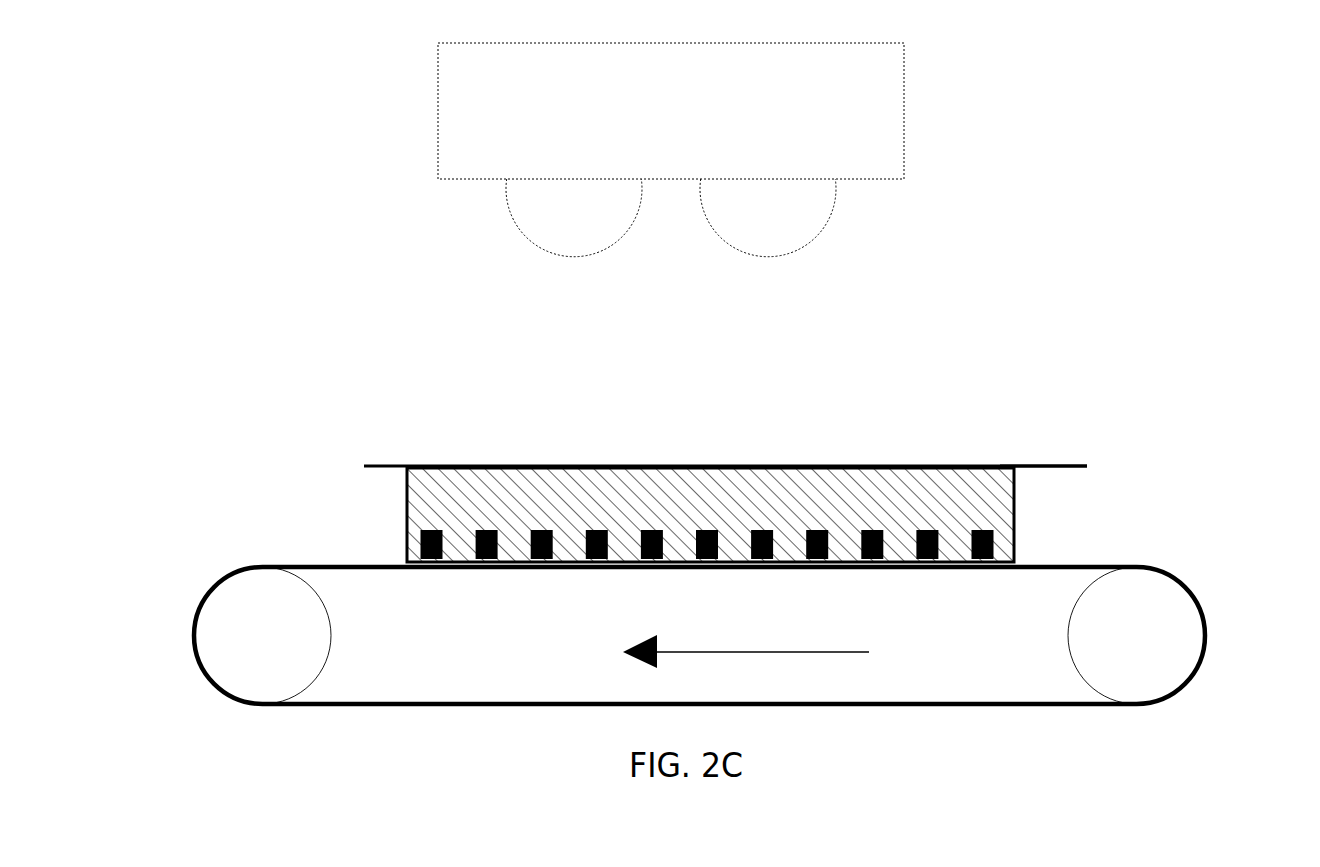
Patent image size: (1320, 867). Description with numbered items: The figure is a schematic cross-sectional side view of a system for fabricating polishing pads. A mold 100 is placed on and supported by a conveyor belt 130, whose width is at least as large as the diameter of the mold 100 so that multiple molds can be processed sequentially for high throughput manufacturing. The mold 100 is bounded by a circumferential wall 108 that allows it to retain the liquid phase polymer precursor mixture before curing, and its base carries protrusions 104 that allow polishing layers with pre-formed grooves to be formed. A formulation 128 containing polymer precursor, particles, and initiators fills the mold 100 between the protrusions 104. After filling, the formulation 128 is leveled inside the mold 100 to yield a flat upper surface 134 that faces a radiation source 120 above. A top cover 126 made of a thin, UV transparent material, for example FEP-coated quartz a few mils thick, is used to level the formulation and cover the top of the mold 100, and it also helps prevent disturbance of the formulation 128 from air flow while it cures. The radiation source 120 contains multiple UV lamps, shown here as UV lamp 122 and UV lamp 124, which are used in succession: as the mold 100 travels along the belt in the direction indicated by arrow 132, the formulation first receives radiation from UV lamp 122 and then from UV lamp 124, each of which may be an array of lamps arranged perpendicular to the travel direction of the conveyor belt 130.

The mold 100 is at (1016, 544).
The protrusions 104 is at (652, 530).
The circumferential wall 108 is at (407, 508).
The radiation source 120 is at (853, 81).
The UV lamp 122 is at (770, 236).
The UV lamp 124 is at (562, 220).
The top cover 126 is at (1090, 467).
The formulation 128 is at (826, 497).
The conveyor belt 130 is at (1162, 620).
The arrow 132 is at (807, 652).
The flat upper surface 134 is at (440, 466).